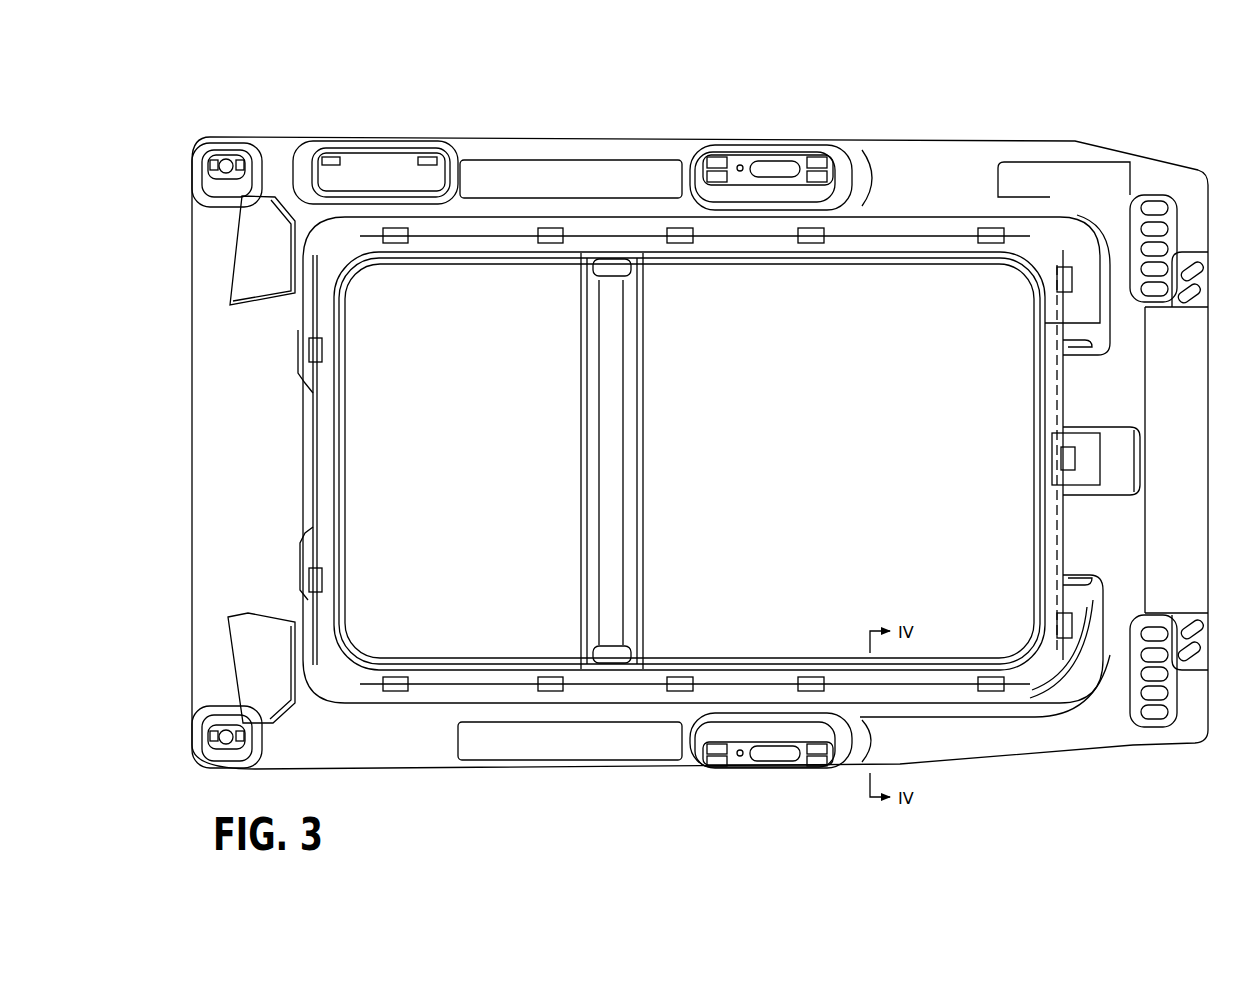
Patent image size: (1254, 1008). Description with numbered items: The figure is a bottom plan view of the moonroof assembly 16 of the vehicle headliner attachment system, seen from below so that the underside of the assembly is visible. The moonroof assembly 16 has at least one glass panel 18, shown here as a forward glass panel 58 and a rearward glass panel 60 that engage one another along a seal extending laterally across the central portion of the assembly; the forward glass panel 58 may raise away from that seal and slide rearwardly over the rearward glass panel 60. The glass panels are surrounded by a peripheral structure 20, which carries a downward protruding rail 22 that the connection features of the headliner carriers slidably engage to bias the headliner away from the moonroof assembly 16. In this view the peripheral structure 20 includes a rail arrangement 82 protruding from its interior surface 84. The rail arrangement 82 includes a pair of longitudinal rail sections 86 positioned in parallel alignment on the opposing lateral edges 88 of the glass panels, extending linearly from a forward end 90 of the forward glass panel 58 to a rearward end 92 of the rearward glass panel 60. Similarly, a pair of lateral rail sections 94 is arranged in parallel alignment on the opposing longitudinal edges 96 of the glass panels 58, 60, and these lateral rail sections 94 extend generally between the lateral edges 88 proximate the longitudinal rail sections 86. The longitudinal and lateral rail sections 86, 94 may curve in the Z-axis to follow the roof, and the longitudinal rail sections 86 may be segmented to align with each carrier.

The moonroof assembly 16 is at (328, 247).
The glass panel 18 is at (883, 305).
The peripheral structure 20 is at (547, 226).
The rail 22 is at (590, 250).
The forward glass panel 58 is at (793, 470).
The rearward glass panel 60 is at (467, 474).
The rail arrangement 82 is at (1077, 252).
The interior surface 84 is at (750, 228).
The longitudinal rail sections 86 is at (640, 228).
The lateral edges 88 is at (737, 264).
The forward end 90 is at (1031, 529).
The rearward end 92 is at (353, 578).
The lateral rail sections 94 is at (312, 433).
The longitudinal edges 96 is at (353, 340).